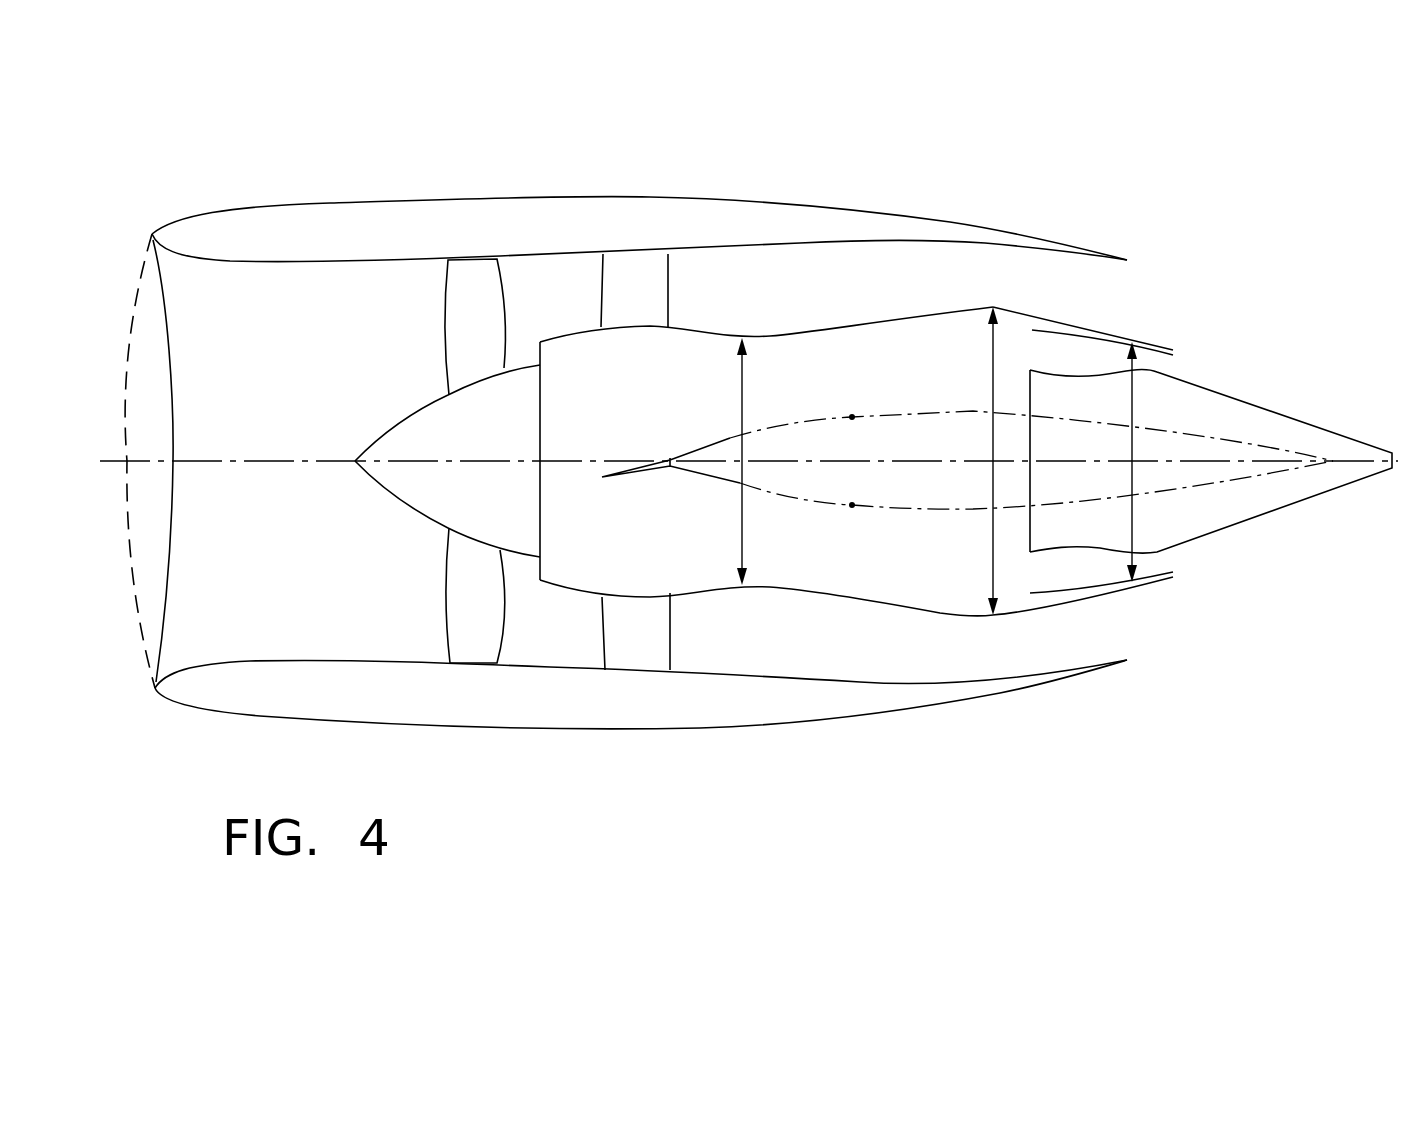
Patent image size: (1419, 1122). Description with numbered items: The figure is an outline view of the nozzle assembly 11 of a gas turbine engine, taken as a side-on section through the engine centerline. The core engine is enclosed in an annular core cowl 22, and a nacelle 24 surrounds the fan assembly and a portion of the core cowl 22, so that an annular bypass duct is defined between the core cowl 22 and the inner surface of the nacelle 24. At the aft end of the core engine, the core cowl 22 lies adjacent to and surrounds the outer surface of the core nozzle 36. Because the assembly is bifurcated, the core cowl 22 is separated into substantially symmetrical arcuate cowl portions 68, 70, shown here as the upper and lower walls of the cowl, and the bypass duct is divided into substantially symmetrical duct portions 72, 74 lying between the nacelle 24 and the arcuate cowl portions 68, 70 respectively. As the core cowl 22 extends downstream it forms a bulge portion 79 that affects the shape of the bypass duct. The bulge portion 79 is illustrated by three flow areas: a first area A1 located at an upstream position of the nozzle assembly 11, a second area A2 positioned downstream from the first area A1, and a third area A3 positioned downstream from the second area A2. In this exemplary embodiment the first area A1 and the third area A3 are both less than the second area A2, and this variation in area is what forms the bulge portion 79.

The nozzle assembly 11 is at (1075, 120).
The core cowl 22 is at (805, 335).
The nacelle 24 is at (980, 227).
The core nozzle 36 is at (1168, 342).
The arcuate cowl portion 68 is at (1018, 307).
The arcuate cowl portion 70 is at (937, 612).
The duct portion 72 is at (1160, 287).
The duct portion 74 is at (1108, 630).
The bulge portion 79 is at (938, 295).
The first area A1 is at (742, 405).
The second area A2 is at (992, 560).
The third area A3 is at (1132, 530).